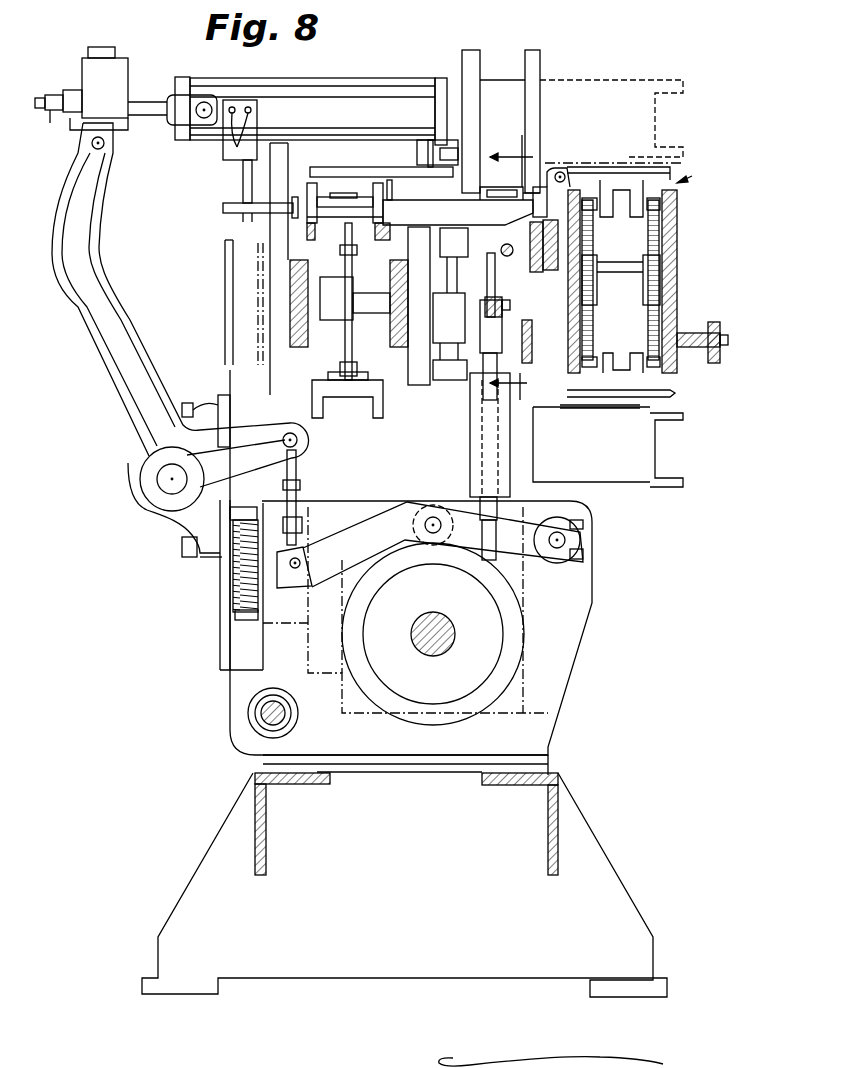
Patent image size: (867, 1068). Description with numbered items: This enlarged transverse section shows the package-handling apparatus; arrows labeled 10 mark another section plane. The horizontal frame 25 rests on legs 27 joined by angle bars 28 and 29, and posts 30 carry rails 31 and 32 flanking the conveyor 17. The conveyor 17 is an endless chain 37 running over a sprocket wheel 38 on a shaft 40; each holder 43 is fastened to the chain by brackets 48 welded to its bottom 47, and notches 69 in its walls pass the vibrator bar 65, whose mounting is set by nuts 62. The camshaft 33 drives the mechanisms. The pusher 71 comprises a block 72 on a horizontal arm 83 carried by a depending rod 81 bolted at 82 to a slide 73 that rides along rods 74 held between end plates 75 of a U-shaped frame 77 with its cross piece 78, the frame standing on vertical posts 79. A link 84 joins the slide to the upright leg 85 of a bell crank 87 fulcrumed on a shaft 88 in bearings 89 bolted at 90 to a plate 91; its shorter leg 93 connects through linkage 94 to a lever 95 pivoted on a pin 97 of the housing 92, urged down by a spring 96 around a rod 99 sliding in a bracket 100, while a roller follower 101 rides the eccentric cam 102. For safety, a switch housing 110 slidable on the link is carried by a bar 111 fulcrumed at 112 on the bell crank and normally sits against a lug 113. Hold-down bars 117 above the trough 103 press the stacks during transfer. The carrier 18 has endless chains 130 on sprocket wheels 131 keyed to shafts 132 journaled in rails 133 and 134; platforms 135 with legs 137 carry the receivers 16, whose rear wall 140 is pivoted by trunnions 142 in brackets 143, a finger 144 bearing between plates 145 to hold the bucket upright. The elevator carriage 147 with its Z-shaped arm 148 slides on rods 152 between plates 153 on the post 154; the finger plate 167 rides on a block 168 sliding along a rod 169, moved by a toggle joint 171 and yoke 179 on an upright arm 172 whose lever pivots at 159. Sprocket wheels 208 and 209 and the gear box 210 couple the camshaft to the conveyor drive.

The arrow / section line 10 is at (511, 266).
The receiver 16 is at (586, 80).
The conveyor 17 is at (327, 185).
The carrier 18 is at (697, 171).
The horizontal frame 25 is at (226, 812).
The legs 27 is at (215, 845).
The angle bar 28 is at (256, 872).
The angle bar 29 is at (548, 872).
The posts 30 is at (233, 370).
The rail 31 is at (298, 347).
The rail 32 is at (398, 347).
The camshaft 33 is at (420, 618).
The endless chain 37 is at (352, 356).
The sprocket wheel 38 is at (344, 356).
The shaft 40 is at (363, 302).
The holders 43 is at (355, 240).
The bottom 47 is at (315, 232).
The brackets 48 is at (370, 386).
The nuts 62 is at (355, 198).
The bar 65 is at (370, 183).
The notches 69 is at (370, 207).
The pusher 71 is at (285, 216).
The block 72 is at (280, 222).
The slide 73 is at (236, 78).
The rods 74 is at (298, 100).
The end plates 75 is at (182, 140).
The U-shaped frame 77 is at (374, 78).
The cross piece 78 is at (352, 78).
The vertical posts 79 is at (420, 140).
The depending rod 81 is at (243, 170).
The bolt connection 82 is at (233, 145).
The horizontal arm 83 is at (234, 212).
The link 84 is at (148, 102).
The upright leg 85 is at (83, 218).
The bell crank 87 is at (137, 478).
The shaft 88 is at (165, 480).
The bearings 89 is at (145, 510).
The bolt connection 90 is at (183, 548).
The plate 91 is at (222, 558).
The housing 92 is at (228, 685).
The shorter leg 93 is at (300, 446).
The linkage 94 is at (300, 470).
The lever 95 is at (377, 514).
The coiled compression spring 96 is at (233, 582).
The pin 97 is at (557, 548).
The rod 99 is at (236, 618).
The bracket 100 is at (233, 515).
The roller follower 101 is at (433, 535).
The eccentric cam 102 is at (408, 680).
The trough 103 is at (390, 232).
The switch housing 110 is at (128, 66).
The bar 111 is at (78, 126).
The fulcrum 112 is at (104, 147).
The lug 113 is at (50, 124).
The hold-down bars 117 is at (386, 167).
The endless chains 130 is at (580, 358).
The sprocket wheels 131 is at (598, 322).
The shafts 132 is at (600, 290).
The rail 133 is at (533, 330).
The rail 134 is at (678, 300).
The platforms 135 is at (630, 167).
The legs 137 is at (605, 212).
The rear wall 140 is at (542, 62).
The trunnions 142 is at (564, 186).
The brackets 143 is at (562, 170).
The finger 144 is at (520, 193).
The parallel plates 145 is at (532, 268).
The carriage 147 is at (458, 292).
The Z-shaped arm 148 is at (458, 212).
The parallel rods 152 is at (445, 345).
The plates 153 is at (458, 382).
The post 154 is at (415, 385).
The pivot pin 159 is at (261, 712).
The plate 167 is at (503, 200).
The block 168 is at (497, 270).
The rod 169 is at (501, 250).
The toggle joint 171 is at (510, 305).
The upright arm 172 is at (482, 455).
The yoke 179 is at (497, 342).
The sprocket wheel 208 is at (220, 658).
The sprocket wheel 209 is at (225, 322).
The gear box 210 is at (342, 696).